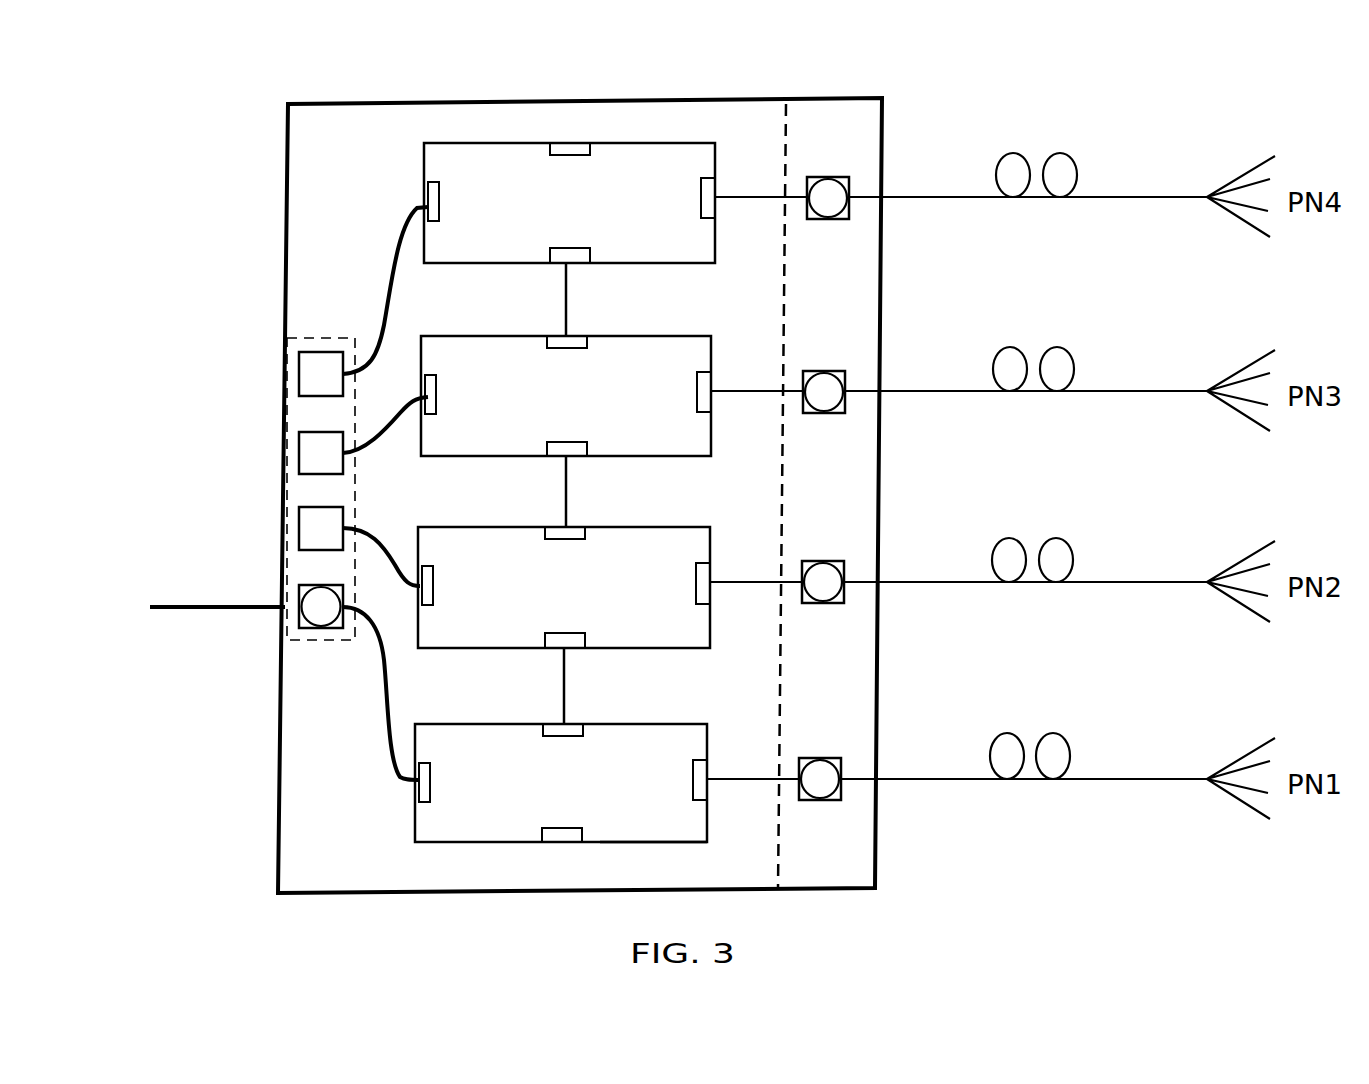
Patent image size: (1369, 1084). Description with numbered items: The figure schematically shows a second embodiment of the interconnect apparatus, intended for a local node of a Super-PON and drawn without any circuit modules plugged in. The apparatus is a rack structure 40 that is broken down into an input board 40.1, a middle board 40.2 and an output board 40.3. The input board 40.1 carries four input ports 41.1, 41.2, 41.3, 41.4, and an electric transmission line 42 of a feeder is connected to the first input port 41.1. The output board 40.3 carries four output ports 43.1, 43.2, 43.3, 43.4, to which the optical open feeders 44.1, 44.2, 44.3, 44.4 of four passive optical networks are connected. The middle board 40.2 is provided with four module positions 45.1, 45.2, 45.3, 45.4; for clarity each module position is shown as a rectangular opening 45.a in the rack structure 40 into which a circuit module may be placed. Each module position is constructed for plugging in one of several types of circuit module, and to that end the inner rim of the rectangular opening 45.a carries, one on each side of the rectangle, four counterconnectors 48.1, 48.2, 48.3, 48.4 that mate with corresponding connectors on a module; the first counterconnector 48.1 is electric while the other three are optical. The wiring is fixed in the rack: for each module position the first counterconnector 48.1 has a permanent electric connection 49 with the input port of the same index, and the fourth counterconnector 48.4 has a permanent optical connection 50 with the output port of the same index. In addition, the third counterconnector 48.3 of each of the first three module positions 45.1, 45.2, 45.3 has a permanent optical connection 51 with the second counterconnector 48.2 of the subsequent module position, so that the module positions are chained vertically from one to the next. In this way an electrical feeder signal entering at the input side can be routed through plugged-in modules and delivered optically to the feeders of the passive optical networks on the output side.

The rack structure 40 is at (279, 168).
The input board 40.1 is at (282, 335).
The middle board 40.2 is at (262, 203).
The output board 40.3 is at (877, 490).
The first input port 41.1 is at (290, 587).
The second input port 41.2 is at (297, 513).
The third input port 41.3 is at (275, 445).
The fourth input port 41.4 is at (270, 379).
The electric transmission line 42 is at (222, 610).
The first output port 43.1 is at (818, 802).
The second output port 43.2 is at (817, 605).
The third output port 43.3 is at (815, 415).
The fourth output port 43.4 is at (818, 220).
The open feeder 44.1 is at (923, 772).
The open feeder 44.2 is at (922, 580).
The open feeder 44.3 is at (920, 383).
The open feeder 44.4 is at (927, 193).
The first module position 45.1 is at (486, 843).
The second module position 45.2 is at (498, 650).
The third module position 45.3 is at (498, 457).
The fourth module position 45.4 is at (498, 264).
The rectangular opening 45.a is at (683, 843).
The first counterconnector 48.1 is at (441, 207).
The second counterconnector 48.2 is at (563, 248).
The third counterconnector 48.3 is at (575, 150).
The fourth counterconnector 48.4 is at (697, 188).
The permanent electric connection 49 is at (387, 283).
The permanent optical connection 50 is at (758, 203).
The permanent optical connection 51 is at (570, 690).